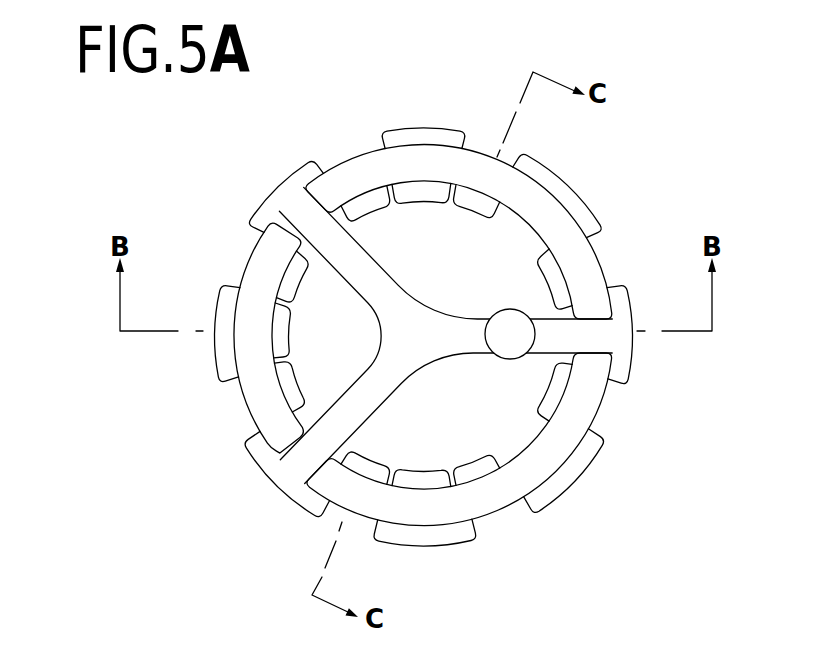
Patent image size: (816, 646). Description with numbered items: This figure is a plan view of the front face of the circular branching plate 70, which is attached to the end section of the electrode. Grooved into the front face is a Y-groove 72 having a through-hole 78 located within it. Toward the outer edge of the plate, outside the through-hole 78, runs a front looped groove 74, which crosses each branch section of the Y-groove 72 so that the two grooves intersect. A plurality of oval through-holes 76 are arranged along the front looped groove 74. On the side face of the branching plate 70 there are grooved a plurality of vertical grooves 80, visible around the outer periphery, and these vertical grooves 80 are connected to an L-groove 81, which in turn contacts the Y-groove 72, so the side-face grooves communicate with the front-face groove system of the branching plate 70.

The branching plate 70 is at (420, 84).
The Y-groove 72 is at (398, 306).
The front looped groove 74 is at (530, 437).
The oval through-holes 76 is at (285, 393).
The through-hole 78 is at (517, 322).
The vertical grooves 80 is at (340, 150).
The L-groove 81 is at (225, 355).